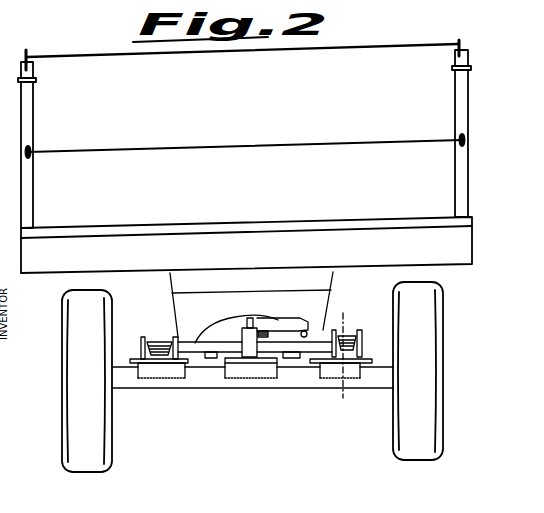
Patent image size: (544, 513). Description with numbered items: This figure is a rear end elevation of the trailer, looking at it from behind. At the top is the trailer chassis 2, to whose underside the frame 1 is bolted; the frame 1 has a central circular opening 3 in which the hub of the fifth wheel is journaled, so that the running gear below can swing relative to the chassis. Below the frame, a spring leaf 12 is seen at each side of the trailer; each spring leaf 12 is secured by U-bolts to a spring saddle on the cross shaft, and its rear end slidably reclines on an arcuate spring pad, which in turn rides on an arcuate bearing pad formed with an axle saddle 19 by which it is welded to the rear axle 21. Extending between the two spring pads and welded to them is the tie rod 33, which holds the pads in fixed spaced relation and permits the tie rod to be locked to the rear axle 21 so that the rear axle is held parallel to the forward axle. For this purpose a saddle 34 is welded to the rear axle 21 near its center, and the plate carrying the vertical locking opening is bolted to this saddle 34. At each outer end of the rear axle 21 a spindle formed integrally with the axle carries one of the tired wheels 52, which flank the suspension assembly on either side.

The frame 1 is at (333, 278).
The trailer chassis 2 is at (467, 247).
The central circular opening 3 is at (366, 313).
The spring leaf 12 is at (159, 345).
The axle saddle 19 is at (166, 375).
The rear axle 21 is at (210, 382).
The tie rod 33 is at (210, 345).
The saddle 34 is at (271, 375).
The tired wheels 52 is at (78, 402).